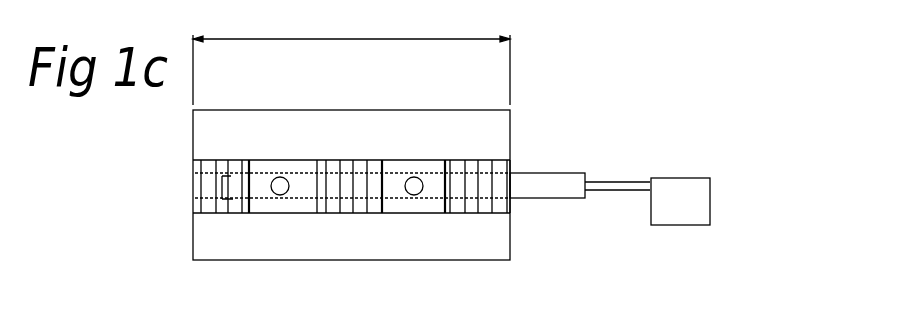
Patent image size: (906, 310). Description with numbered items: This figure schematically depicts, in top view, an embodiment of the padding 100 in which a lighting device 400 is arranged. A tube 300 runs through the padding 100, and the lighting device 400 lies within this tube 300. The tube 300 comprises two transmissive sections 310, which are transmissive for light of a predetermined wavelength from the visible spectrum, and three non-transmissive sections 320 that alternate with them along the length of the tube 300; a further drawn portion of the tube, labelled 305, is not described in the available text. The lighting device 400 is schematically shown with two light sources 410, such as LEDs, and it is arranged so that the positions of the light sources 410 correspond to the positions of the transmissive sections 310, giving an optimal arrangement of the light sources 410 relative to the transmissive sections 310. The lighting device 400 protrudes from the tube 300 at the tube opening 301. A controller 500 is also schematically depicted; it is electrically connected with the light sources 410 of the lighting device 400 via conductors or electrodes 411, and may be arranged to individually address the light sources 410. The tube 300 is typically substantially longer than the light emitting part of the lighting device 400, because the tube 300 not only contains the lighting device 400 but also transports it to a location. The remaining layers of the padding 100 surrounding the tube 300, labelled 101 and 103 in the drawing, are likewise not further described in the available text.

The padding 100 is at (522, 86).
The substrate 101 is at (467, 243).
The carrier layer 103 is at (193, 235).
The tube 300 is at (189, 191).
The tube opening 301 is at (515, 163).
The intermediate layer 305 is at (420, 170).
The transmissive section 310 is at (437, 168).
The non-transmissive section 320 is at (212, 170).
The lighting device 400 is at (552, 172).
The light source 410 is at (413, 183).
The conductors or electrodes 411 is at (632, 182).
The controller 500 is at (712, 192).